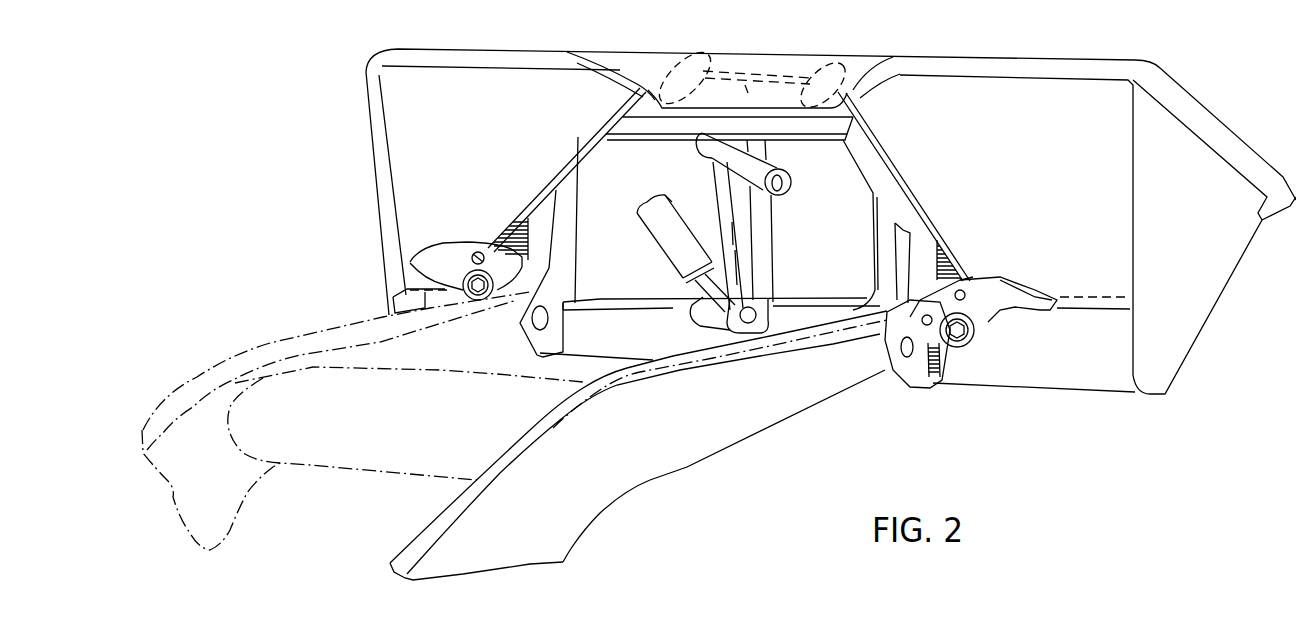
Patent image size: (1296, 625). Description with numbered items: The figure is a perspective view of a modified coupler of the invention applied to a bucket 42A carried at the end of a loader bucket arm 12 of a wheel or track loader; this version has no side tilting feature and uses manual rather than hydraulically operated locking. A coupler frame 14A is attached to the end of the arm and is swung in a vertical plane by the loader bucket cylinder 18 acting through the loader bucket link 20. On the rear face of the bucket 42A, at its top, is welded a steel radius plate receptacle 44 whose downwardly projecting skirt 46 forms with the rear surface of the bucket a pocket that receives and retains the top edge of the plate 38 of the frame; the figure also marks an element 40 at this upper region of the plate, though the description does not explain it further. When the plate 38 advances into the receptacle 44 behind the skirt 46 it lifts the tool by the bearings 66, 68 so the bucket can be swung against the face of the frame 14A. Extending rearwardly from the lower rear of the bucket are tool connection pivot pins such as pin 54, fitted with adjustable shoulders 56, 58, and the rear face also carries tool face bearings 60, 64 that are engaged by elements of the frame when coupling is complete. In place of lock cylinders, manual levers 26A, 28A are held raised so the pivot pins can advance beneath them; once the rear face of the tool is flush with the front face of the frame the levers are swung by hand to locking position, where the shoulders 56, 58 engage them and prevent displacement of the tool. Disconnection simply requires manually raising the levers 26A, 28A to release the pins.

The loader bucket arm 12 is at (637, 437).
The coupler frame 14A is at (565, 133).
The loader bucket cylinder 18 is at (672, 242).
The loader bucket link 20 is at (686, 150).
The lever 26A is at (418, 269).
The lever 28A is at (1044, 314).
The plate 38 is at (741, 62).
The central pivot pin 40 is at (784, 68).
The bucket 42A is at (364, 156).
The radius plate receptacle 44 is at (643, 70).
The skirt 46 is at (632, 106).
The tool connection pivot pin 54 is at (977, 336).
The adjustable shoulder 56 is at (505, 286).
The adjustable shoulder 58 is at (962, 350).
The tool face bearing 60 is at (513, 237).
The tool face bearing 64 is at (950, 268).
The bearing 66 is at (714, 44).
The bearing 68 is at (858, 45).